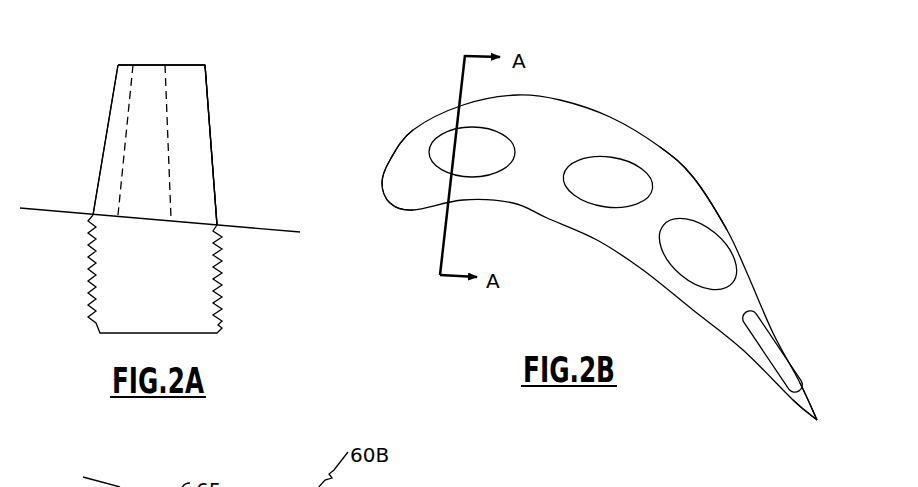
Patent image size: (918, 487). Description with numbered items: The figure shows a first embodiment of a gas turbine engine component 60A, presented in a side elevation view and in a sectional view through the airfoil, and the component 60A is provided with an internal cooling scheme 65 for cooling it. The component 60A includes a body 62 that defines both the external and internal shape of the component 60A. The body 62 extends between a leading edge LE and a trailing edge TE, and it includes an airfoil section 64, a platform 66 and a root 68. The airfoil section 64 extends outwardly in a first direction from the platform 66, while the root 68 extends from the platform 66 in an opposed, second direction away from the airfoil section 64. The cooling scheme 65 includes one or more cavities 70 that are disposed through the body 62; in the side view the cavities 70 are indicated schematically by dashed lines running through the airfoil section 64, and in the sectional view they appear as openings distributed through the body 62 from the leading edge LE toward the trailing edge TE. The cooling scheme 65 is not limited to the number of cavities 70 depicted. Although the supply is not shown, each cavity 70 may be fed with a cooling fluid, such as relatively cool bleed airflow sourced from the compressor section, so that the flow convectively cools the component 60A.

In FIG. 2A, the component 60A is at (327, 61).
In FIG. 2B, the component 60A is at (696, 47).
In FIG. 2A, the body 62 is at (106, 98).
In FIG. 2B, the body 62 is at (697, 170).
In FIG. 2A, the airfoil section 64 is at (203, 192).
In FIG. 2B, the airfoil section 64 is at (698, 213).
In FIG. 2A, the internal cooling scheme 65 is at (152, 60).
In FIG. 2B, the internal cooling scheme 65 is at (517, 124).
In FIG. 2A, the platform 66 is at (273, 231).
In FIG. 2A, the root 68 is at (188, 293).
In FIG. 2A, the cavity 70 is at (168, 152).
In FIG. 2B, the cavity 70 is at (498, 152).
In FIG. 2A, the leading edge LE is at (100, 170).
In FIG. 2B, the leading edge LE is at (383, 195).
In FIG. 2A, the trailing edge TE is at (210, 115).
In FIG. 2B, the trailing edge TE is at (817, 421).